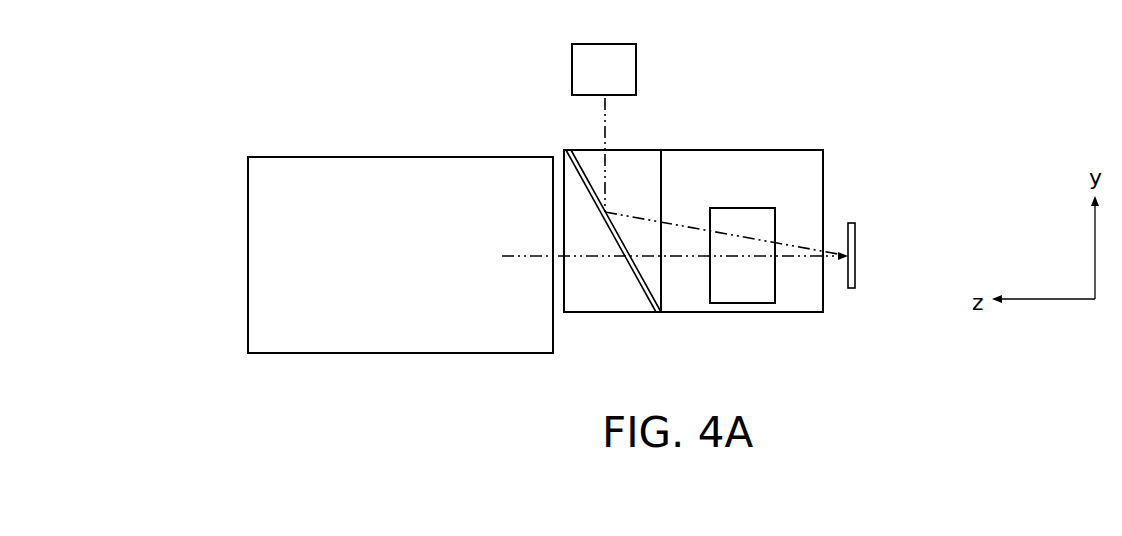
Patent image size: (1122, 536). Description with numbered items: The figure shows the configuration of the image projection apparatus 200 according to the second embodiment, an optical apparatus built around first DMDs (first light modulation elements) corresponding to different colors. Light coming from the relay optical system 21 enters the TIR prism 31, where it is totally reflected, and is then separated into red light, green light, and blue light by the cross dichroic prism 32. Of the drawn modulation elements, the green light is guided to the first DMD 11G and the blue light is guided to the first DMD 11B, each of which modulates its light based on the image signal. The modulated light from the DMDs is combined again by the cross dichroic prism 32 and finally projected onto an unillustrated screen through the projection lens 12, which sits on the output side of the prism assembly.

The projection lens 12 is at (375, 170).
The relay optical system 21 is at (637, 72).
The TIR prism 31 is at (760, 167).
The cross dichroic prism 32 is at (612, 298).
The first DMD 11B is at (743, 292).
The first DMD 11G is at (855, 247).
The image projection apparatus 200 is at (1036, 127).